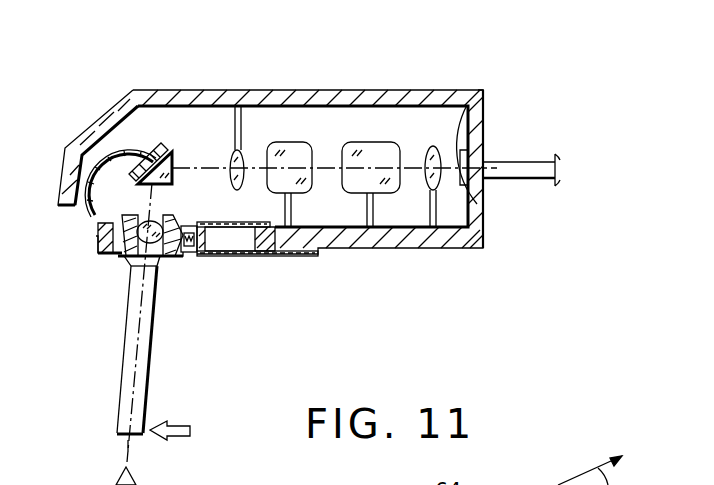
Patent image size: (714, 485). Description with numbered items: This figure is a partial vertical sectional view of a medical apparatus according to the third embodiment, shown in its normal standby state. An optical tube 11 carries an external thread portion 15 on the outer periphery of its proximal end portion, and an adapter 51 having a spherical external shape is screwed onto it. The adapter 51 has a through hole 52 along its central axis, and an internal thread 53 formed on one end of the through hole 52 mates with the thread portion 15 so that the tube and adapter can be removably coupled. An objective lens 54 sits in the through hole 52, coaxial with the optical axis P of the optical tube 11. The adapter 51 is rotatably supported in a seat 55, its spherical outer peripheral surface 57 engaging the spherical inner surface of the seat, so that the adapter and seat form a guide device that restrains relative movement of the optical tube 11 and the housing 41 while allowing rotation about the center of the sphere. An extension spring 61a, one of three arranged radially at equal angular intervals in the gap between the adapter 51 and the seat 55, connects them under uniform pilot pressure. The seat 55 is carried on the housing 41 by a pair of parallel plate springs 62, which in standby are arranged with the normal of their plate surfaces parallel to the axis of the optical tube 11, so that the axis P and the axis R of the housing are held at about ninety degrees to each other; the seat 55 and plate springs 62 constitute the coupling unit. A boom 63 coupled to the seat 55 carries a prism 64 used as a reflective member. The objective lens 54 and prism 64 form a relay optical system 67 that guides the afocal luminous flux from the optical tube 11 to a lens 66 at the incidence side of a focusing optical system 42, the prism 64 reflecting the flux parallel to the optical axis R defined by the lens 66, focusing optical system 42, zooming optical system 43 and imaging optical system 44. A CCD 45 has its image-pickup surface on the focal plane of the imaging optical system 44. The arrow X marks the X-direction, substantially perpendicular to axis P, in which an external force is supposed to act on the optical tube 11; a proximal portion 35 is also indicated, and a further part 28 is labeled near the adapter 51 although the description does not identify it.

The optical tube 11 is at (120, 397).
The external thread portion 15 is at (130, 268).
The connecting portion 28 is at (117, 262).
The proximal portion 35 is at (532, 162).
The housing 41 is at (426, 248).
The focusing optical system 42 is at (296, 142).
The zooming optical system 43 is at (372, 142).
The imaging optical system 44 is at (434, 148).
The CCD 45 is at (482, 92).
The adapter 51 is at (122, 214).
The through hole 52 is at (177, 262).
The internal thread 53 is at (157, 268).
The objective lens 54 is at (165, 216).
The seat 55 is at (107, 251).
The outer peripheral surface 57 is at (96, 239).
The extension spring 61a is at (187, 255).
The parallel plate springs 62 is at (208, 223).
The boom 63 is at (113, 150).
The prism 64 is at (169, 185).
The lens 66 is at (240, 150).
The relay optical system 67 is at (157, 49).
The optical axis R is at (477, 204).
The X-direction X is at (181, 433).
The optical axis P is at (128, 446).